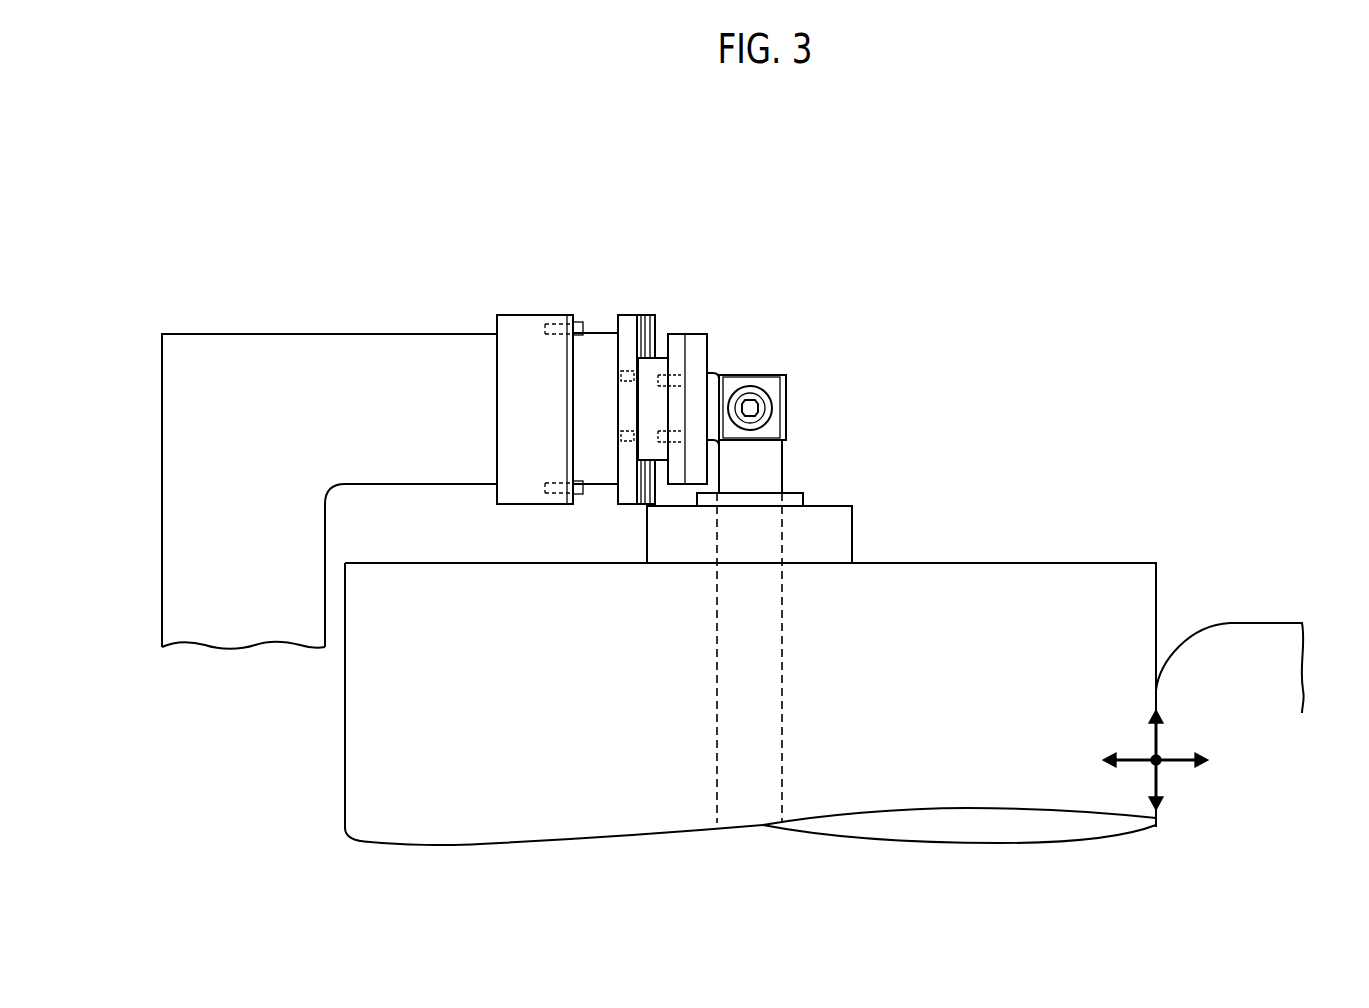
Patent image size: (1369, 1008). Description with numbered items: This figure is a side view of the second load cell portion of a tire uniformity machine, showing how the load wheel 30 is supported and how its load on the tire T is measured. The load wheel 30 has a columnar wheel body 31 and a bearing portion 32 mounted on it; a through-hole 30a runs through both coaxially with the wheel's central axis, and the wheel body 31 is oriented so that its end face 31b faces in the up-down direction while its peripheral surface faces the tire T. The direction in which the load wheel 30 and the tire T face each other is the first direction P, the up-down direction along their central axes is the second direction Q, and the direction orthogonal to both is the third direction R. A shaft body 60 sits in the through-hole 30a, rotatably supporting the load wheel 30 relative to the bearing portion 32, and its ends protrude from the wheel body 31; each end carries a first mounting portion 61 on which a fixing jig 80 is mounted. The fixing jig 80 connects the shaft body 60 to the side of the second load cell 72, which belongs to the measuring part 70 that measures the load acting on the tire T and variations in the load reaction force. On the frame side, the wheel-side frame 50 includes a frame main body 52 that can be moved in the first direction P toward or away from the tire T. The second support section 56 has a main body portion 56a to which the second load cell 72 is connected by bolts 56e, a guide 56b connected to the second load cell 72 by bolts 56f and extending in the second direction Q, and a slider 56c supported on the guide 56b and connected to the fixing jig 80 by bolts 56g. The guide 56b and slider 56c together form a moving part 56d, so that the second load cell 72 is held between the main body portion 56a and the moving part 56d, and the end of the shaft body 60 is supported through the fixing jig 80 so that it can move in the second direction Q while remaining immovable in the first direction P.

The wheel-side frame 50 is at (218, 332).
The frame main body 52 is at (254, 332).
The second support section 56 is at (352, 360).
The main body portion 56a is at (400, 367).
The guide 56b is at (647, 316).
The slider 56c is at (662, 366).
The moving part 56d is at (690, 333).
The bolts 56e is at (583, 492).
The bolts 56f is at (633, 343).
The bolts 56g is at (690, 433).
The measuring part 70 is at (543, 342).
The second load cell 72 is at (597, 342).
The shaft body 60 is at (765, 463).
The first mounting portion 61 is at (782, 388).
The fixing jig 80 is at (787, 422).
The bearing portion 32 is at (852, 507).
The load wheel 30 is at (1108, 558).
The through-hole 30a is at (781, 735).
The wheel body 31 is at (1100, 623).
The end face 31b is at (1042, 563).
The tire T is at (1258, 635).
The first direction P is at (1160, 758).
The second direction Q is at (1158, 764).
The third direction R is at (1154, 758).